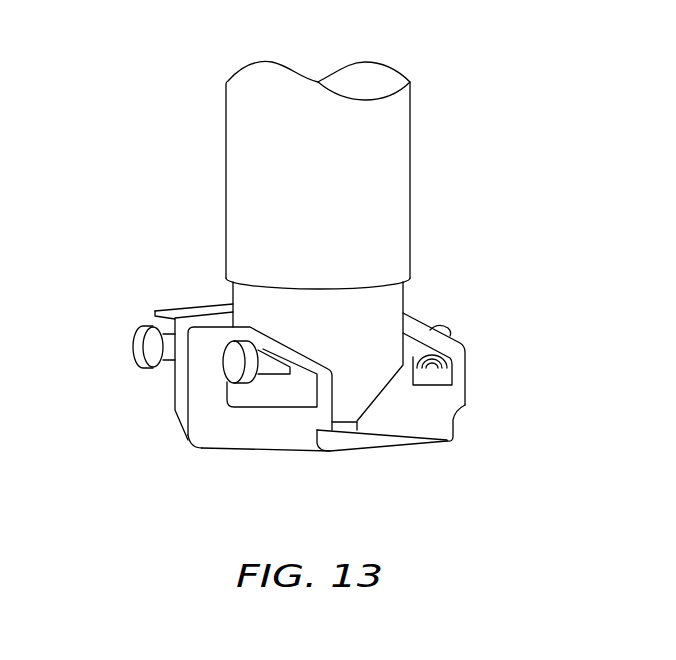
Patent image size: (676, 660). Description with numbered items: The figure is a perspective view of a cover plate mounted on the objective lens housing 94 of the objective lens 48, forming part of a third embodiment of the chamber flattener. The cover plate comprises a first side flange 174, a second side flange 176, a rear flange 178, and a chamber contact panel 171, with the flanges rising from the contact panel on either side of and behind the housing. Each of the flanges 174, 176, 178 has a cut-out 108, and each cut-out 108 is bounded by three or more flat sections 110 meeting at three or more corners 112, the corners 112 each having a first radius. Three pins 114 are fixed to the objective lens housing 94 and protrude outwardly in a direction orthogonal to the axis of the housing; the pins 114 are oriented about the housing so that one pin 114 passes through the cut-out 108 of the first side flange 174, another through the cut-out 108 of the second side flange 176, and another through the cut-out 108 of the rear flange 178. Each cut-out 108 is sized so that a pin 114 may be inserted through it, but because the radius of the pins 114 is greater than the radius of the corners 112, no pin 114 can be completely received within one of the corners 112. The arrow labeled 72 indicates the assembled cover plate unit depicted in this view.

The objective lens housing 94 is at (410, 127).
The assembly 72 is at (240, 457).
The rear flange 178 is at (173, 388).
The first side flange 174 is at (210, 397).
The corners 112 is at (313, 402).
The pins 114 is at (133, 345).
The second side flange 176 is at (467, 375).
The cut-out 108 is at (430, 383).
The flat sections 110 is at (415, 354).
The objective lens 48 is at (358, 433).
The chamber contact panel 171 is at (417, 438).